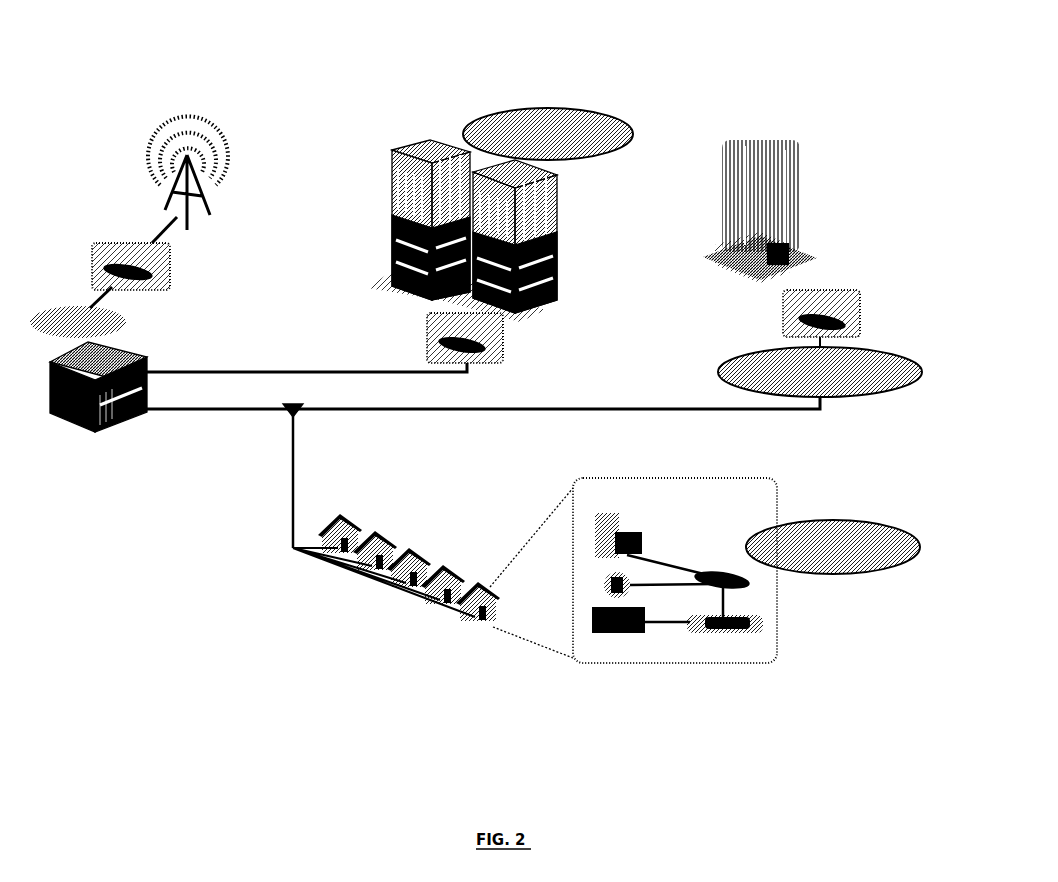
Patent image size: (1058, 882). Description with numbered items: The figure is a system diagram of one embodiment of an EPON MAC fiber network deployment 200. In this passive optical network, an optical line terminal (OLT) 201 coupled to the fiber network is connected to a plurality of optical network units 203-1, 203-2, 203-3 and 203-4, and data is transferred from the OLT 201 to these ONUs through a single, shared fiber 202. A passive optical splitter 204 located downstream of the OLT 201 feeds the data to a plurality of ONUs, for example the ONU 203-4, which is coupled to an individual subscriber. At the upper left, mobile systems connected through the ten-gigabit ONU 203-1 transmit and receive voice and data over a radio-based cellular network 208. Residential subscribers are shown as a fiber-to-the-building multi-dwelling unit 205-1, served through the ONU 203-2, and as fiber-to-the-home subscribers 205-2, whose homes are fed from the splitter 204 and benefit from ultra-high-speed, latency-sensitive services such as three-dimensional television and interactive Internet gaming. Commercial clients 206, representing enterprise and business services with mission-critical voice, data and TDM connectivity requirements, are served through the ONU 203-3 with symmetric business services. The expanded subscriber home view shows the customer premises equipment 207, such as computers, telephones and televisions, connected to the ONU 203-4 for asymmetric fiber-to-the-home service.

The EPON MAC fiber network deployment 200 is at (677, 76).
The optical line terminal (OLT) 201 is at (68, 438).
The fiber 202 is at (495, 412).
The 10G ONU 203-1 is at (172, 265).
The optical network unit (ONU) 203-2 is at (510, 346).
The optical network unit (ONU) 203-3 is at (858, 296).
The optical network unit (ONU) 203-4 is at (752, 590).
The passive optical splitter (POS) 204 is at (283, 413).
The fiber-to-the-building multi-dwelling unit (MDU) 205-1 is at (412, 150).
The fiber-to-the-home (FTTH) subscribers 205-2 is at (352, 588).
The commercial clients (enterprise and business services) 206 is at (805, 161).
The customer premises equipment 207 is at (660, 665).
The cellular network 208 is at (228, 128).